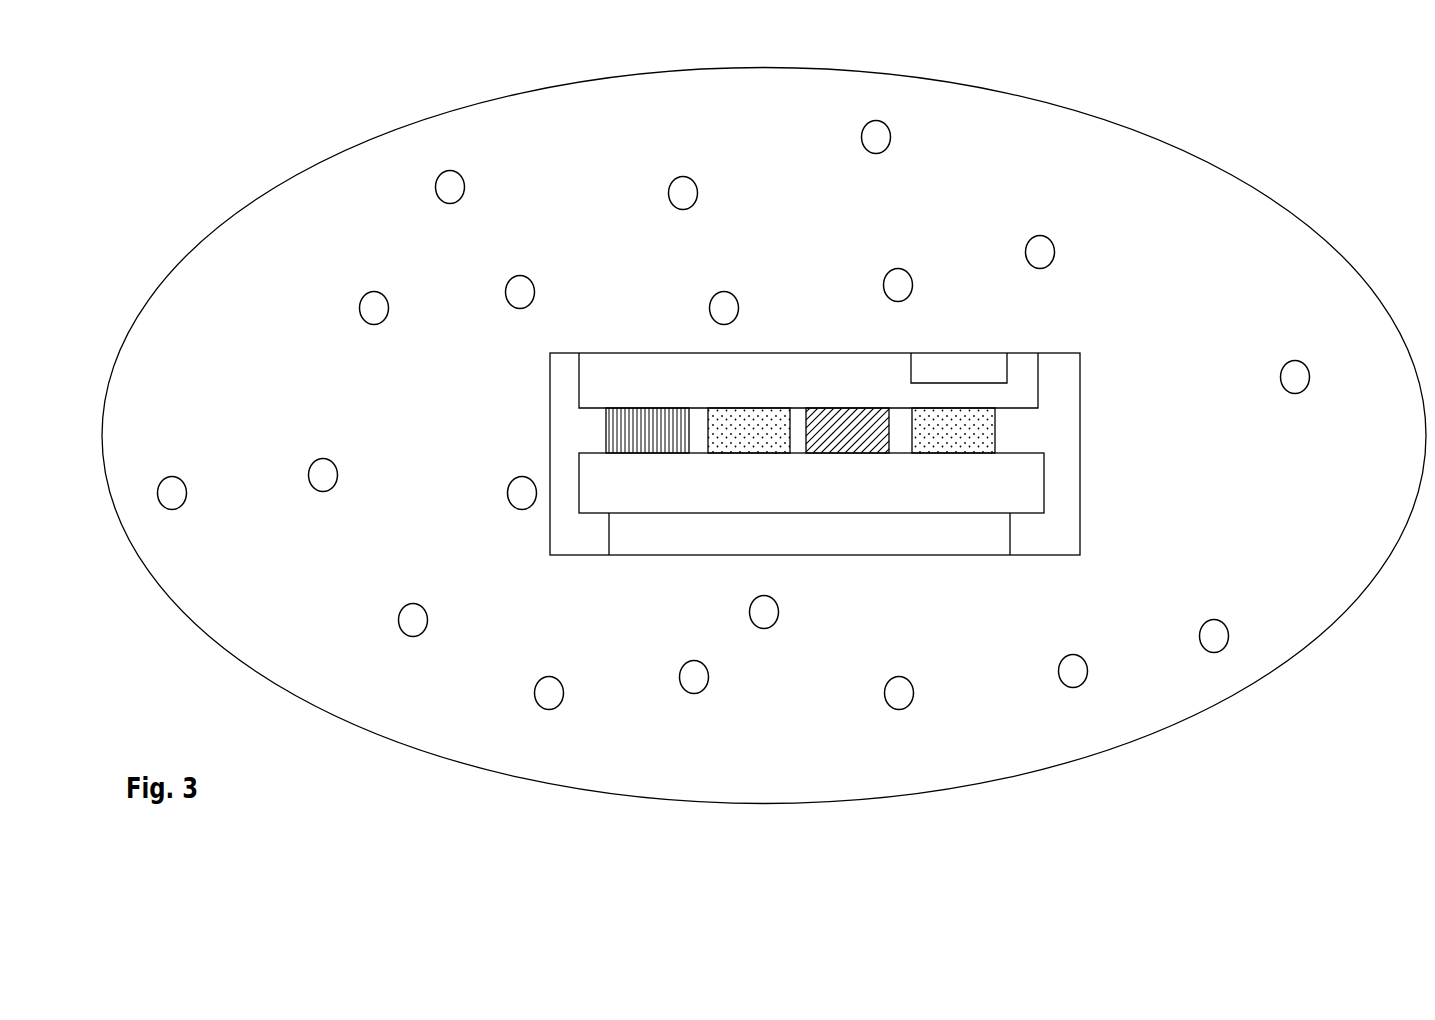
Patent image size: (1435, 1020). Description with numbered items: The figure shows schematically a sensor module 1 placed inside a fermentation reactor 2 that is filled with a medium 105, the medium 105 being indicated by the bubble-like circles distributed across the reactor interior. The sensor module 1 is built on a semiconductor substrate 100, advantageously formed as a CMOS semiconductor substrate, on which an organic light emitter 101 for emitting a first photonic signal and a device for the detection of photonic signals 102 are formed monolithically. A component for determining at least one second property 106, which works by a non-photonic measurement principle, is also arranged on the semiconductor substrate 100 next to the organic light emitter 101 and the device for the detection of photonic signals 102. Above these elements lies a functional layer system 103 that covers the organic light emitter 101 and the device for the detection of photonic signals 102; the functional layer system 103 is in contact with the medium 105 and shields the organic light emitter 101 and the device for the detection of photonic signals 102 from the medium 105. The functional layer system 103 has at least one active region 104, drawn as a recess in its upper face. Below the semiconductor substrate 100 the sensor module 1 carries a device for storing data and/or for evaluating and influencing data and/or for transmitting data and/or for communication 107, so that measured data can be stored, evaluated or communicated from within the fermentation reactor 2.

The sensor module 1 is at (821, 404).
The fermentation reactor 2 is at (318, 162).
The semiconductor substrate 100 is at (1015, 488).
The organic light emitter 101 is at (950, 433).
The device for the detection of photonic signals 102 is at (845, 455).
The functional layer system 103 is at (1010, 370).
The active region 104 is at (1062, 353).
The medium 105 is at (1012, 143).
The component for determining at least one second property 106 is at (648, 458).
The device for storing data and/or for evaluating and influencing data and/or for tr 107 is at (798, 532).